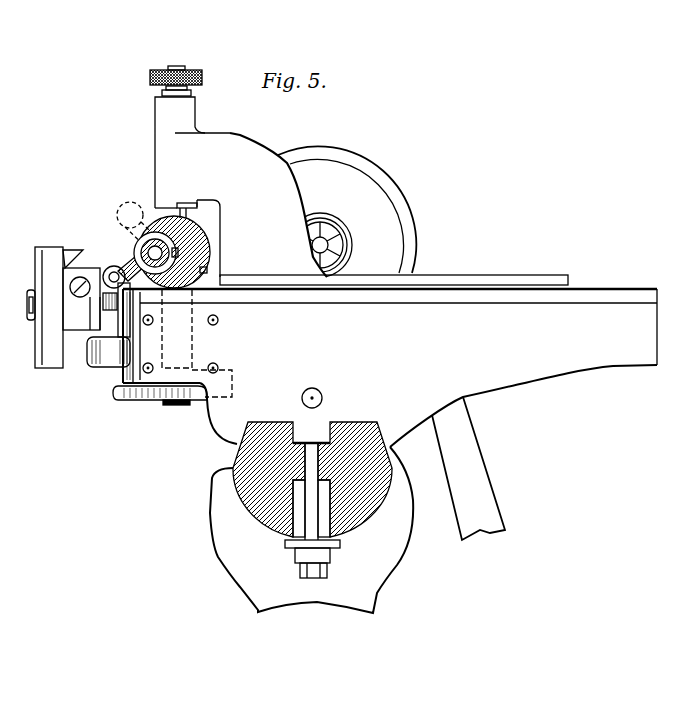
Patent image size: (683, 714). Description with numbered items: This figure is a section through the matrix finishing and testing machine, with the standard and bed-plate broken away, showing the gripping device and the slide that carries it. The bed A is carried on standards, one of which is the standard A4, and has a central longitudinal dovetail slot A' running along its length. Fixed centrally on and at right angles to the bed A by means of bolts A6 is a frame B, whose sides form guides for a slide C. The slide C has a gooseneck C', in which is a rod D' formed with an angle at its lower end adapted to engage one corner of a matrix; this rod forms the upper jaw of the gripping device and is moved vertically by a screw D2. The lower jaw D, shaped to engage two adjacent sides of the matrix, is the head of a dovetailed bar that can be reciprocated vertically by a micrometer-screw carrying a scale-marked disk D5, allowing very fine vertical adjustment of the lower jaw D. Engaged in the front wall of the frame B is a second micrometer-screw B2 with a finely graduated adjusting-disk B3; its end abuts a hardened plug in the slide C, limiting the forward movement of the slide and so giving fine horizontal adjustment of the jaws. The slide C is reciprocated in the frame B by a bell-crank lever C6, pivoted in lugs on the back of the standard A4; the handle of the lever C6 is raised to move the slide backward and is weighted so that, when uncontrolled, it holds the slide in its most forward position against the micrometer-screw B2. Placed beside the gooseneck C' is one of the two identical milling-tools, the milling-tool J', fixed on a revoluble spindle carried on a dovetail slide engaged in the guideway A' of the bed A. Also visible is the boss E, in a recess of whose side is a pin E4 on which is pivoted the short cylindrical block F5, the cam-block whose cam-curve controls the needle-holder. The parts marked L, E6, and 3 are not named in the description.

The gooseneck C' is at (295, 199).
The lower jaw D is at (139, 252).
The screw D2 is at (202, 78).
The rod D' is at (193, 190).
The bracket L is at (212, 240).
The boss E is at (197, 222).
The short cylindrical block F5 is at (143, 252).
The pin E4 is at (130, 250).
The handle ball E6 is at (115, 270).
The milling-tool J' is at (356, 227).
The slide C is at (394, 264).
The frame B is at (580, 362).
The disk D5 is at (150, 392).
The adjusting-disk B3 is at (66, 249).
The second micrometer-screw B2 is at (93, 310).
The clamp nut 3 is at (133, 357).
The bed A is at (244, 479).
The dovetail slot A' is at (265, 479).
The bolts A6 is at (310, 500).
The standard A4 is at (392, 540).
The bell-crank lever C6 is at (473, 467).